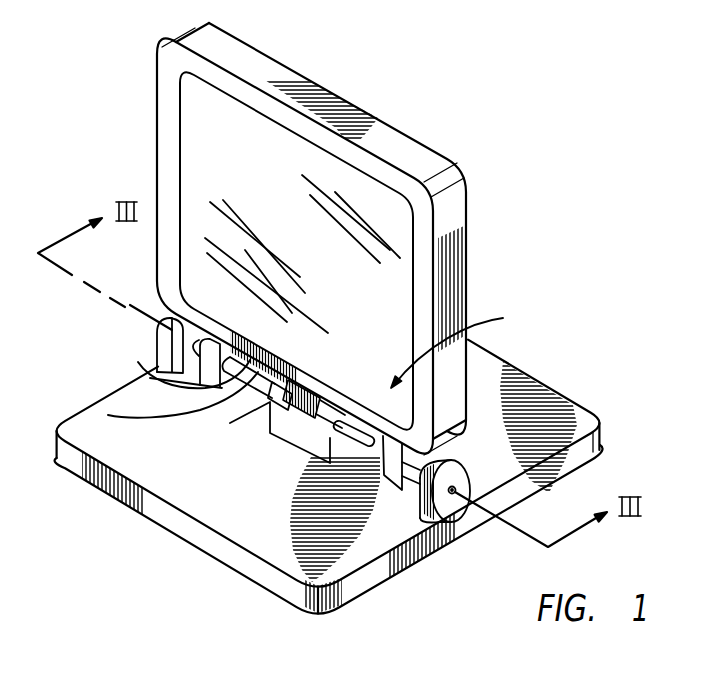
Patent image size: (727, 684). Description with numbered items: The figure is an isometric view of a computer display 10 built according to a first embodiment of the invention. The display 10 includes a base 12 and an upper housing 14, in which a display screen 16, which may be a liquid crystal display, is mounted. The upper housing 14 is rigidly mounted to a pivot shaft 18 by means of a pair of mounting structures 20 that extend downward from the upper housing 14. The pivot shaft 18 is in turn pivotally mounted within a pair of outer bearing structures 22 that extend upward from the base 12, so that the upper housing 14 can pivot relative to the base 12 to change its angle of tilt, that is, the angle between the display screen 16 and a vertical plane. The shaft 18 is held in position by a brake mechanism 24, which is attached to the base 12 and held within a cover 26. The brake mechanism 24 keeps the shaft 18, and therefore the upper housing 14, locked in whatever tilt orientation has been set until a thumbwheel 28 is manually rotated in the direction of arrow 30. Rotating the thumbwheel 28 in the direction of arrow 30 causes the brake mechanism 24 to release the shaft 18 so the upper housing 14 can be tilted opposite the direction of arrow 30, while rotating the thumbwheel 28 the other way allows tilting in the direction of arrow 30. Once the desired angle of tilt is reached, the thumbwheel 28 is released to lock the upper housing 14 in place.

The computer display 10 is at (579, 235).
The base 12 is at (576, 403).
The upper housing 14 is at (470, 222).
The display screen 16 is at (206, 134).
The pivot shaft 18 is at (108, 416).
The mounting structures 20 is at (153, 373).
The outer bearing structures 22 is at (412, 512).
The brake mechanism 24 is at (262, 467).
The cover 26 is at (312, 462).
The thumbwheel 28 is at (270, 404).
The arrow 30 is at (470, 322).